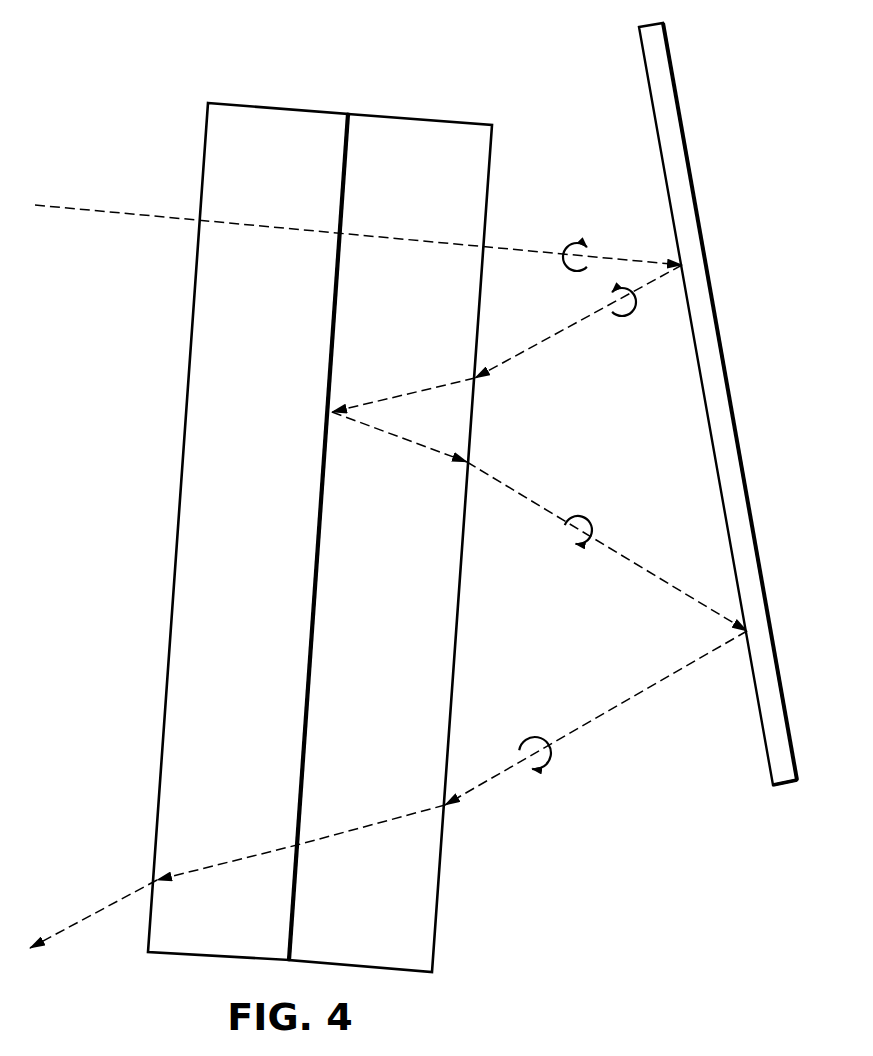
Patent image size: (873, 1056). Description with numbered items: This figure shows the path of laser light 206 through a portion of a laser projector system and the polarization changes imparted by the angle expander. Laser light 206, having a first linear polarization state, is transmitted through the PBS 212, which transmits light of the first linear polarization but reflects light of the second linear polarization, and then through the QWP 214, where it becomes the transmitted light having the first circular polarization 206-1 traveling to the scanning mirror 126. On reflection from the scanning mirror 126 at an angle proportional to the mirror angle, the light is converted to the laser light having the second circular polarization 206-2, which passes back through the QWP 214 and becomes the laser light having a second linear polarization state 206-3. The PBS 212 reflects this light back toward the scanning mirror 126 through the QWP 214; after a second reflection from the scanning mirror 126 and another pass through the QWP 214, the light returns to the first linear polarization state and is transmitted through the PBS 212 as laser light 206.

The PBS 212 is at (275, 118).
The QWP 214 is at (420, 128).
The scanning mirror 126 is at (732, 400).
The laser light 206 is at (105, 211).
The transmitted light having the first circular polarization 206-1 is at (522, 250).
The laser light having the second circular polarization 206-2 is at (550, 340).
The laser light having a second linear polarization state 206-3 is at (418, 392).